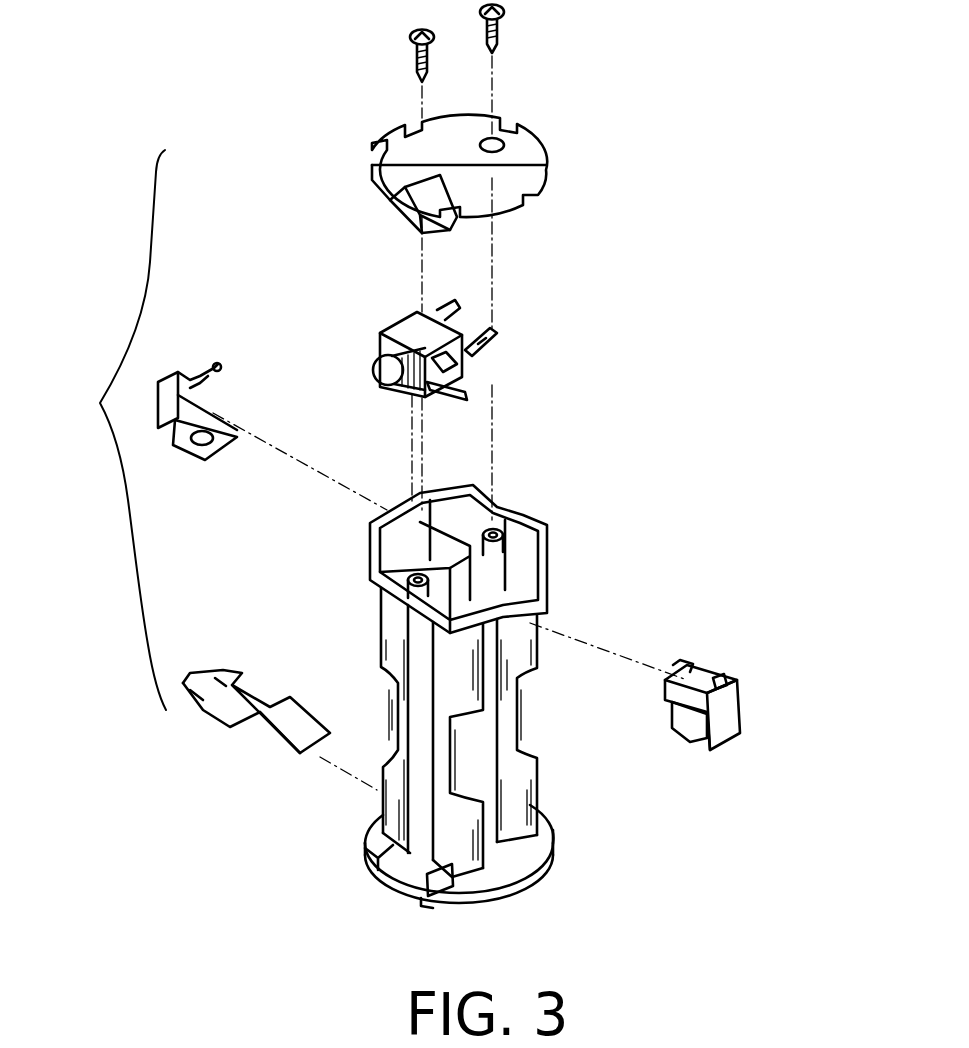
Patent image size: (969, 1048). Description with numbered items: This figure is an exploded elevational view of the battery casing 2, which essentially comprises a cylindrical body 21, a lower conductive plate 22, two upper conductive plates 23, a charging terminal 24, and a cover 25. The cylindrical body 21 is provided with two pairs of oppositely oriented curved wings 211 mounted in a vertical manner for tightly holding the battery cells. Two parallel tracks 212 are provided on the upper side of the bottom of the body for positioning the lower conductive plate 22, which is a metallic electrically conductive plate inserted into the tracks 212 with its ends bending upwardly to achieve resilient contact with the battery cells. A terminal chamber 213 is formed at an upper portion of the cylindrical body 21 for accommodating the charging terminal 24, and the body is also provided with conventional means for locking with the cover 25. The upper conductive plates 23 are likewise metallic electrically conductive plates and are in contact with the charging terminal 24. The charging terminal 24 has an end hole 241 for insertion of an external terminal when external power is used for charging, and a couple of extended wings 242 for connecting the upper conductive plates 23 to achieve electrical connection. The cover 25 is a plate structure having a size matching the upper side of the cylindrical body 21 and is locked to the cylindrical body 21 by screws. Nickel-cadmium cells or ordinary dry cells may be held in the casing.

The battery casing 2 is at (123, 430).
The cylindrical body 21 is at (481, 702).
The curved wings 211 is at (523, 635).
The parallel tracks 212 is at (500, 860).
The terminal chamber 213 is at (370, 527).
The lower conductive plate 22 is at (273, 733).
The upper conductive plates 23 is at (205, 458).
The charging terminal 24 is at (445, 350).
The end hole 241 is at (373, 368).
The extended wings 242 is at (497, 332).
The cover 25 is at (527, 147).